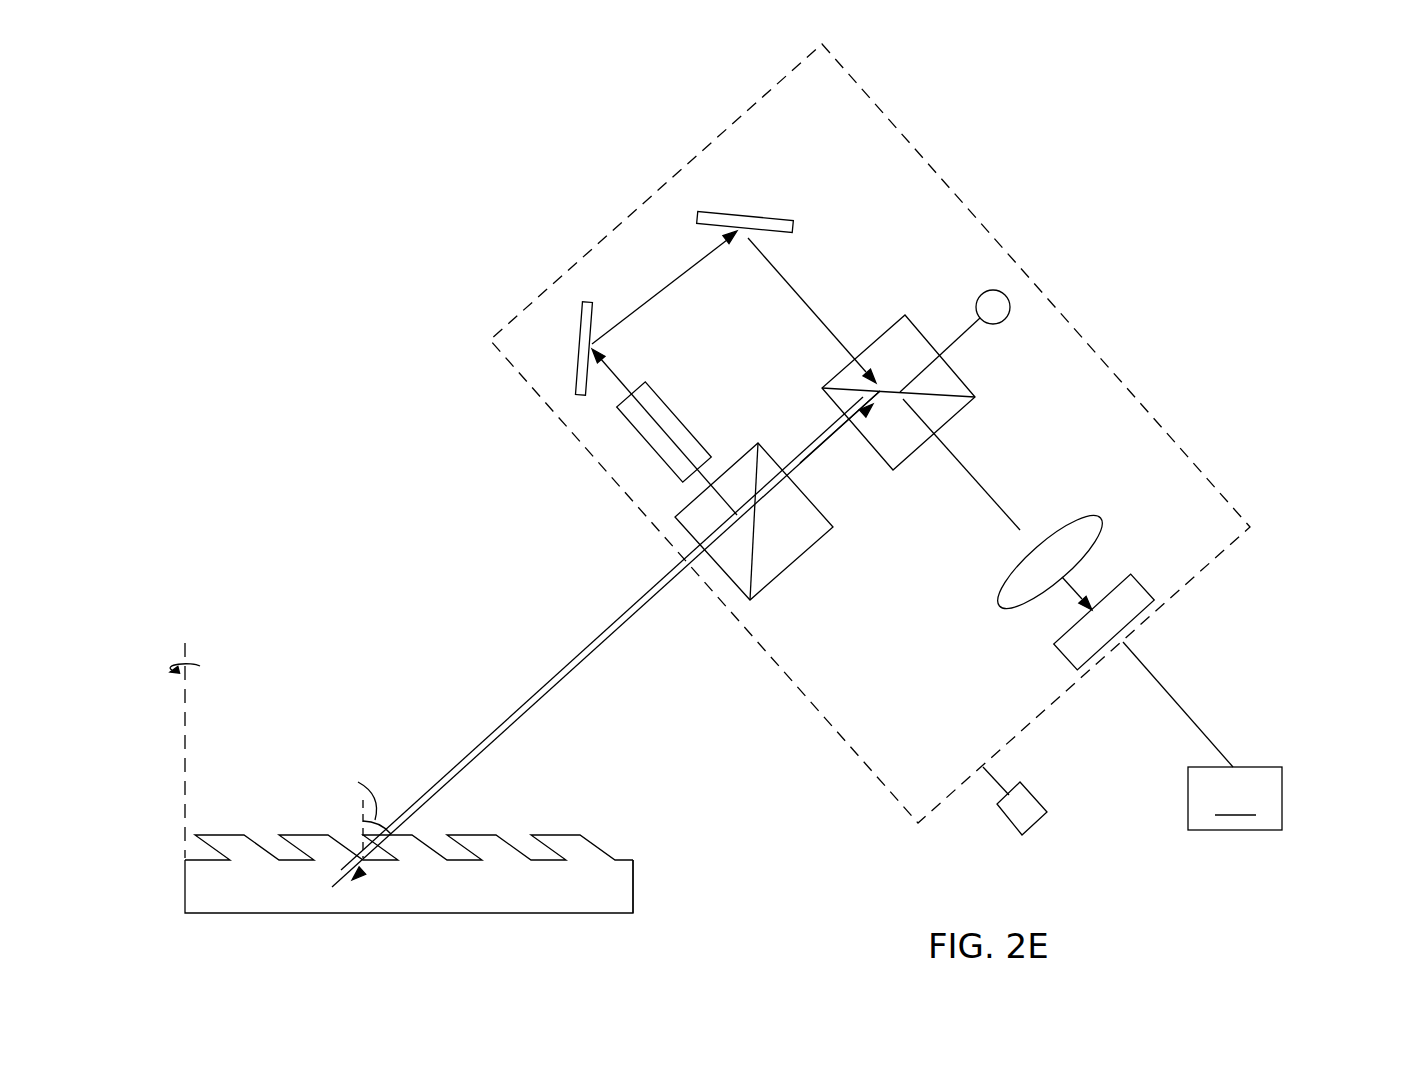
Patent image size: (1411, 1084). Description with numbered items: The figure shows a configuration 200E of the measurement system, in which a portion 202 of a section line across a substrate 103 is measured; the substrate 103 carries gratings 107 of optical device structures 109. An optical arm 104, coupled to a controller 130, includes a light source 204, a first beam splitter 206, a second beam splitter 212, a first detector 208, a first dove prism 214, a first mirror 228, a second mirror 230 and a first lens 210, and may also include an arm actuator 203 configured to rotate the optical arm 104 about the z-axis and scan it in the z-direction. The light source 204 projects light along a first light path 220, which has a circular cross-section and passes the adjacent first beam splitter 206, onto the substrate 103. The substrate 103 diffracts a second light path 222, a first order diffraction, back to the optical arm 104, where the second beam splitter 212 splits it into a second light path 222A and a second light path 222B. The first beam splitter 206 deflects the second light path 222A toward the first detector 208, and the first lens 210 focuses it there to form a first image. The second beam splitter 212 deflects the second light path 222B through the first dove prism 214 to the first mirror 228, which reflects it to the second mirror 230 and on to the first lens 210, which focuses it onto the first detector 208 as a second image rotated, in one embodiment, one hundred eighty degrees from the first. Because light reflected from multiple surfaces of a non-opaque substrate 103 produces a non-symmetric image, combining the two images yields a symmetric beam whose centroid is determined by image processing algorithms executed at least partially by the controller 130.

The configuration 200E is at (1278, 162).
The optical arm 104 is at (950, 182).
The second mirror 230 is at (770, 214).
The first mirror 228 is at (578, 318).
The first beam splitter 206 is at (889, 318).
The light source 204 is at (1010, 300).
The first dove prism 214 is at (672, 408).
The second beam splitter 212 is at (802, 557).
The second light path 222B is at (617, 383).
The second light path 222 is at (483, 750).
The second light path 222A is at (828, 448).
The first light path 220 is at (842, 445).
The first lens 210 is at (1094, 533).
The first detector 208 is at (1143, 588).
The controller 130 is at (1202, 736).
The arm actuator 203 is at (1033, 790).
The portion 202 is at (414, 798).
The gratings 107 is at (482, 913).
The optical device structures 109 is at (486, 842).
The substrate 103 is at (633, 897).